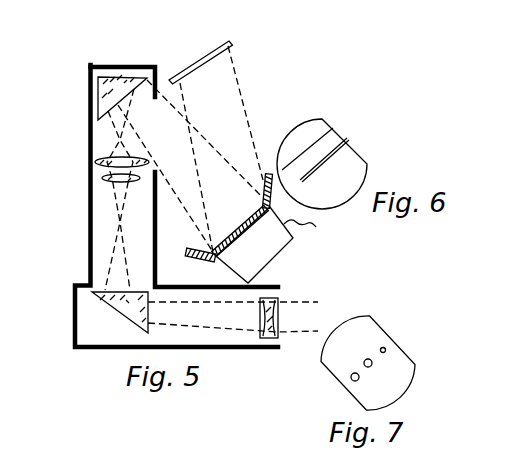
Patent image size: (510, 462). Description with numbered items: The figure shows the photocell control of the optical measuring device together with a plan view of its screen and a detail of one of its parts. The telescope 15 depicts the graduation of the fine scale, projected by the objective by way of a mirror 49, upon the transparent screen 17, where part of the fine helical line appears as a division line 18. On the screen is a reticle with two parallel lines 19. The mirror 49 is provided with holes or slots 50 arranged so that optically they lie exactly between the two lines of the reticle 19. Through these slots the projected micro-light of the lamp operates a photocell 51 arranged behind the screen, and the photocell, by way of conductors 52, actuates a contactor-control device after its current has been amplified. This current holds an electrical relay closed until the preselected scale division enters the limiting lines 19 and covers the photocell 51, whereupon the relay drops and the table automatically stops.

In FIG. 5, the telescope 15 is at (90, 318).
In FIG. 5, the transparent screen 17 is at (194, 67).
In FIG. 6, the transparent screen 17 is at (343, 170).
In FIG. 6, the division line 18 is at (317, 142).
In FIG. 6, the reticle with two parallel lines 19 is at (340, 145).
In FIG. 5, the mirror 49 is at (197, 256).
In FIG. 7, the mirror 49 is at (365, 340).
In FIG. 5, the holes or slots 50 is at (249, 227).
In FIG. 7, the holes or slots 50 is at (386, 347).
In FIG. 5, the photocell 51 is at (258, 253).
In FIG. 5, the conductors 52 is at (314, 229).